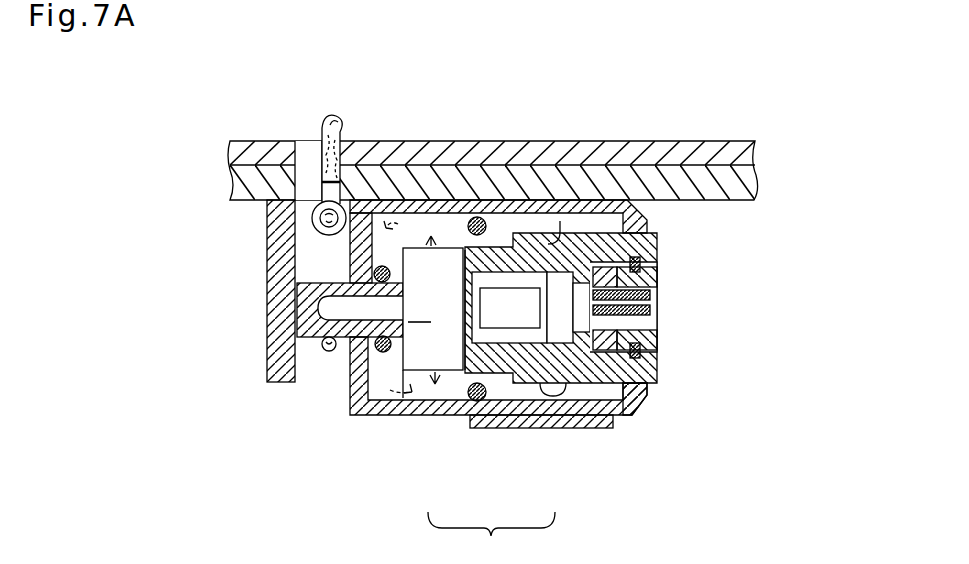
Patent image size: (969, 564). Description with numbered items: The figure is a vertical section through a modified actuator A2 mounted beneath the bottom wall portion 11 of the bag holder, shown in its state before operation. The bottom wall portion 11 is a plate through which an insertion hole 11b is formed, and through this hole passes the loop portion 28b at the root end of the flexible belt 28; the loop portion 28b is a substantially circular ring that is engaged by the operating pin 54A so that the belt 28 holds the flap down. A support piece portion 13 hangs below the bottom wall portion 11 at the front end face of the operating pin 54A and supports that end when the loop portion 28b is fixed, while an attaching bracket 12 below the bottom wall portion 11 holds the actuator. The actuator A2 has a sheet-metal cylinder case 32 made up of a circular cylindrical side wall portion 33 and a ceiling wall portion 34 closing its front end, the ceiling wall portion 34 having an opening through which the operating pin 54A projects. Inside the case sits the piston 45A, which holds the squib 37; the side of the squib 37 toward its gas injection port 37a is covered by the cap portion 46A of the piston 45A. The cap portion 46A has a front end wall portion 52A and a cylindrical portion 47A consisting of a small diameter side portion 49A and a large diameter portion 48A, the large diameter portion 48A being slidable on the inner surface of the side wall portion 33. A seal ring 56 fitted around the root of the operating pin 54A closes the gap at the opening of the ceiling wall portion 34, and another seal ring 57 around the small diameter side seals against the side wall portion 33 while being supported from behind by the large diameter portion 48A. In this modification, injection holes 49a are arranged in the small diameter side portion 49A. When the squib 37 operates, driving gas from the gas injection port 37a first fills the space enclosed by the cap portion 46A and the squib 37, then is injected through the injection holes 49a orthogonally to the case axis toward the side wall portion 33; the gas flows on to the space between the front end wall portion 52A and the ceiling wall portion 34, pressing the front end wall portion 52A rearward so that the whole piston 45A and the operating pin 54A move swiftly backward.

The bottom wall portion 11 is at (700, 140).
The insertion hole 11b is at (310, 150).
The belt 28 is at (329, 121).
The loop portion 28b is at (326, 352).
The support piece portion 13 is at (268, 229).
The ceiling wall portion 34 is at (356, 256).
The operating pin 54A is at (300, 310).
The seal ring 56 is at (366, 356).
The front end wall portion 52A is at (358, 403).
The cap portion 46A is at (412, 396).
The injection holes 49a is at (430, 238).
The gas injection port 37a is at (460, 305).
The seal ring 57 is at (470, 238).
The piston 45A is at (487, 217).
The squib 37 is at (692, 262).
The cylinder case 32 is at (490, 357).
The side wall portion 33 is at (615, 418).
The attaching bracket 12 is at (577, 430).
The small diameter side portion 49A is at (459, 386).
The large diameter portion 48A is at (512, 397).
The cylindrical portion 47A is at (491, 538).
The actuator A2 is at (290, 462).